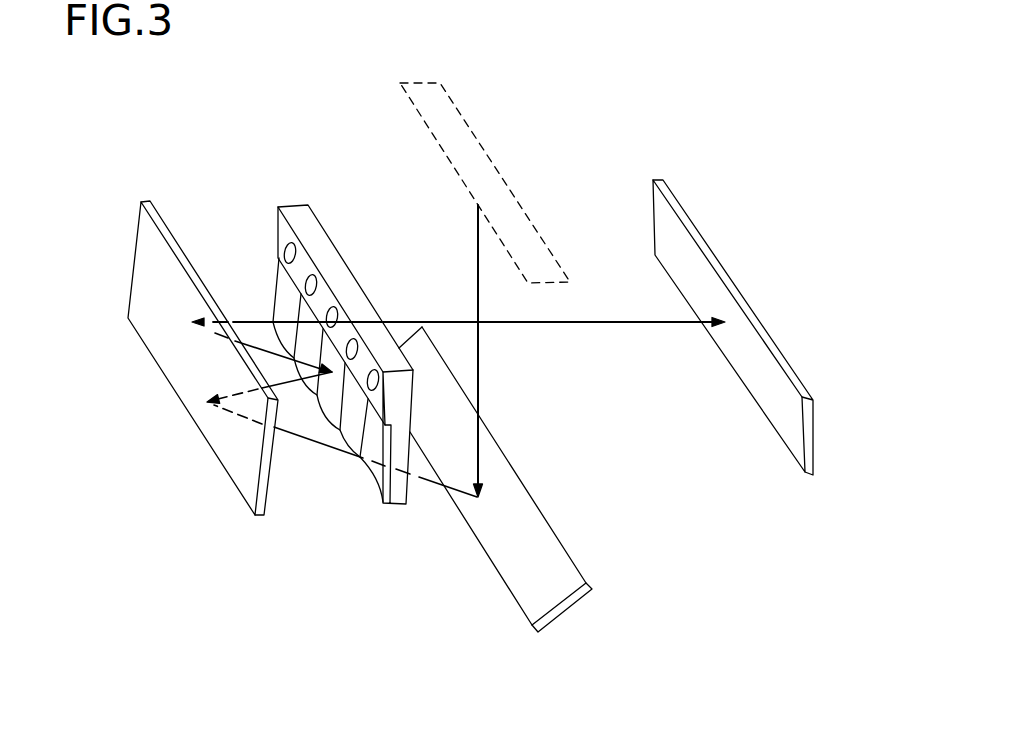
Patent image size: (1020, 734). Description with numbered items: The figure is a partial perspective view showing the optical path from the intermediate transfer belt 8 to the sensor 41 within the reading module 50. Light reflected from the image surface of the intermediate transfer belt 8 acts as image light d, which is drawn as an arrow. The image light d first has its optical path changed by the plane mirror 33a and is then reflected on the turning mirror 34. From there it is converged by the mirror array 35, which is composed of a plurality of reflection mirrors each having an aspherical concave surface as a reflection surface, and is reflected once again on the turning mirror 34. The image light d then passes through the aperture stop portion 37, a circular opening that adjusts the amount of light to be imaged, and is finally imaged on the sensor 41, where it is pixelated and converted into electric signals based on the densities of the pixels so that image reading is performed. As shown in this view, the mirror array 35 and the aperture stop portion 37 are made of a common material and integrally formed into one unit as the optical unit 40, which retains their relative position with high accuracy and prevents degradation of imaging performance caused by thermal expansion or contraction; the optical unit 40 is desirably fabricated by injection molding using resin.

The intermediate transfer belt 8 is at (482, 145).
The plane mirror 33a is at (558, 542).
The turning mirror 34 is at (180, 380).
The mirror array 35 is at (282, 311).
The aperture stop portion 37 is at (289, 245).
The optical unit 40 is at (255, 140).
The sensor 41 is at (782, 348).
The reading module 50 is at (692, 98).
The image light d is at (477, 255).